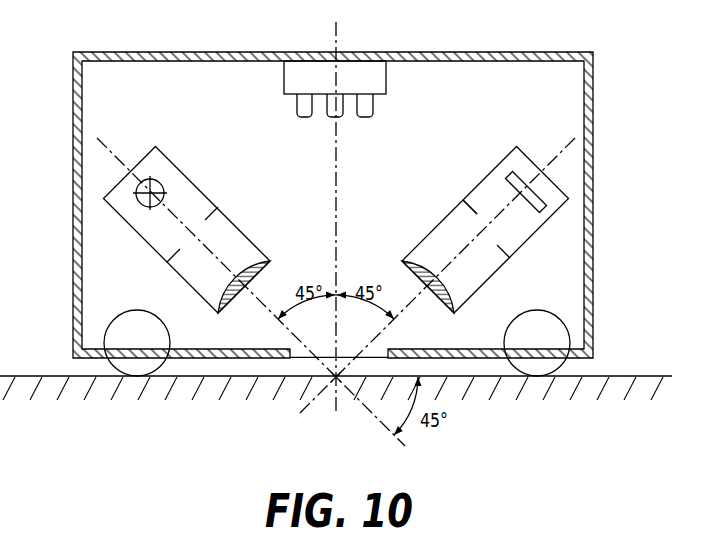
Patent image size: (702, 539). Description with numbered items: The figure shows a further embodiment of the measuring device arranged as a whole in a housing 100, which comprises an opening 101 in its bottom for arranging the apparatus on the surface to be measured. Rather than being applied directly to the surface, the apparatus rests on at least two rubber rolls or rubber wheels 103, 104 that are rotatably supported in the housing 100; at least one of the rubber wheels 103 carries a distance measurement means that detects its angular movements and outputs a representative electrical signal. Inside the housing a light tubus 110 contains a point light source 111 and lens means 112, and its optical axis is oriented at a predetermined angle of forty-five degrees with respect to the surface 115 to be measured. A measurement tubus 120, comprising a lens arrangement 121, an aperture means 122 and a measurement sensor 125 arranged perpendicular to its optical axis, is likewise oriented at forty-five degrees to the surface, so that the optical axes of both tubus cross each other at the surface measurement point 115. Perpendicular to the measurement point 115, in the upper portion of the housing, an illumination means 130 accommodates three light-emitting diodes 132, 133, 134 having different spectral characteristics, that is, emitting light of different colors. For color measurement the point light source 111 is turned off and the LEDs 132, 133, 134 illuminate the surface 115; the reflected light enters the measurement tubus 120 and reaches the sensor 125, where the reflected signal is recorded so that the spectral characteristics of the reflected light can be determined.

The housing 100 is at (148, 53).
The opening 101 is at (296, 359).
The rubber wheel 103 is at (122, 326).
The rubber wheel 104 is at (535, 320).
The light tubus 110 is at (125, 210).
The point light source 111 is at (156, 181).
The lens means 112 is at (272, 275).
The surface measurement point 115 is at (336, 379).
The measurement tubus 120 is at (530, 227).
The lens arrangement 121 is at (423, 254).
The aperture means 122 is at (470, 213).
The measurement sensor 125 is at (547, 183).
The illumination means 130 is at (307, 75).
The light-emitting diode 132 is at (303, 113).
The light-emitting diode 133 is at (331, 118).
The light-emitting diode 134 is at (364, 118).